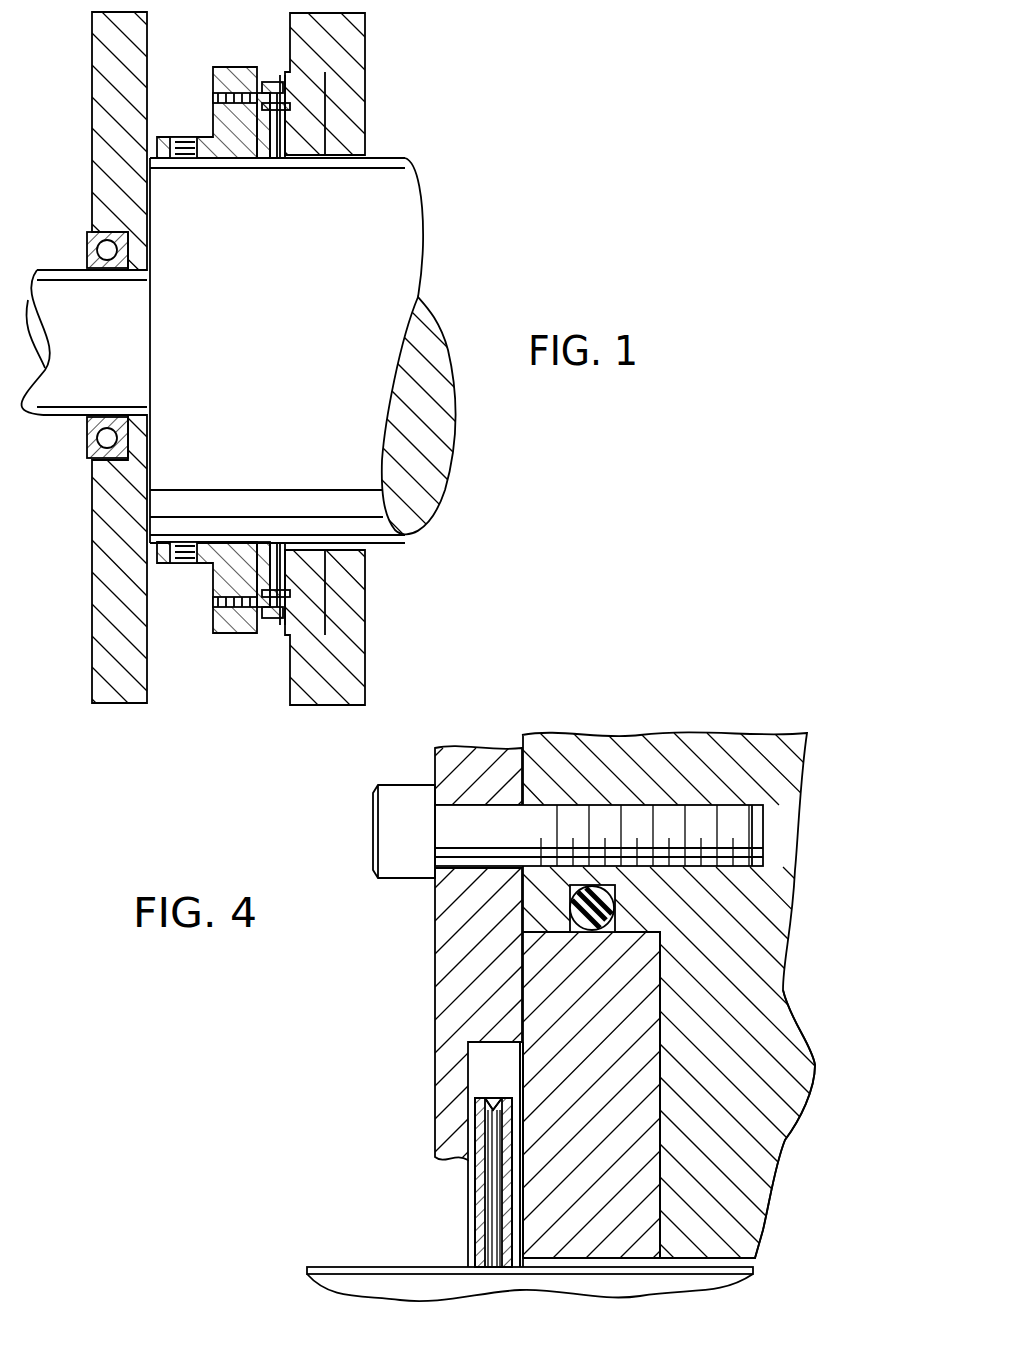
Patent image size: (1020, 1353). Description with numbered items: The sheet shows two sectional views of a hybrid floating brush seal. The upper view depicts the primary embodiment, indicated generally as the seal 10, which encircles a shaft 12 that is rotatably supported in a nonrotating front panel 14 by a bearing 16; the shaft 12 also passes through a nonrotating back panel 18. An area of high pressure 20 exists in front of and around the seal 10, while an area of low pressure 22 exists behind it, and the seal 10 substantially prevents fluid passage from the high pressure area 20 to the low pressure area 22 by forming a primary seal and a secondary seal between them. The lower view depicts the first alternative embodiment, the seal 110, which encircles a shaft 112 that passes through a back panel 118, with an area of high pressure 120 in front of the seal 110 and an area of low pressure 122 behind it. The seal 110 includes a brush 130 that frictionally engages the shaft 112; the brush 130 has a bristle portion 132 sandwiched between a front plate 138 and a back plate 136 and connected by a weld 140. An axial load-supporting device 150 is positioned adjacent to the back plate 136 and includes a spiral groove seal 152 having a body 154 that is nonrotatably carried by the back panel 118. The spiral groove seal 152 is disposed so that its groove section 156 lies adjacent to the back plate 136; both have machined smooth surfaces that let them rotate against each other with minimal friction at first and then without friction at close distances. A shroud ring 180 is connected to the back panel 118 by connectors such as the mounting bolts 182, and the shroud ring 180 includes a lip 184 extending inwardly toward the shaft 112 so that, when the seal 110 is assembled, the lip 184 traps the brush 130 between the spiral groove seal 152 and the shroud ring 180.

In FIG. 1, the hybrid floating brush seal 10 is at (240, 650).
In FIG. 1, the shaft 12 is at (412, 192).
In FIG. 1, the front panel 14 is at (92, 170).
In FIG. 1, the bearing 16 is at (92, 250).
In FIG. 1, the back panel 18 is at (357, 72).
In FIG. 1, the area of high pressure 20 is at (228, 22).
In FIG. 1, the area of low pressure 22 is at (376, 154).
In FIG. 4, the hybrid floating brush seal 110 is at (428, 1167).
In FIG. 4, the shaft 112 is at (308, 1272).
In FIG. 4, the back panel 118 is at (715, 745).
In FIG. 4, the area of high pressure 120 is at (315, 1075).
In FIG. 4, the area of low pressure 122 is at (755, 1270).
In FIG. 4, the brush 130 is at (460, 1212).
In FIG. 4, the bristle portion 132 is at (476, 1247).
In FIG. 4, the back plate 136 is at (502, 1203).
In FIG. 4, the front plate 138 is at (470, 1190).
In FIG. 4, the weld 140 is at (492, 1098).
In FIG. 4, the axial load-supporting device 150 is at (689, 1019).
In FIG. 4, the spiral groove seal 152 is at (664, 972).
In FIG. 4, the body 154 is at (648, 1150).
In FIG. 4, the groove section 156 is at (534, 1105).
In FIG. 4, the shroud ring 180 is at (453, 926).
In FIG. 4, the mounting bolts 182 is at (385, 826).
In FIG. 4, the lip 184 is at (447, 1058).